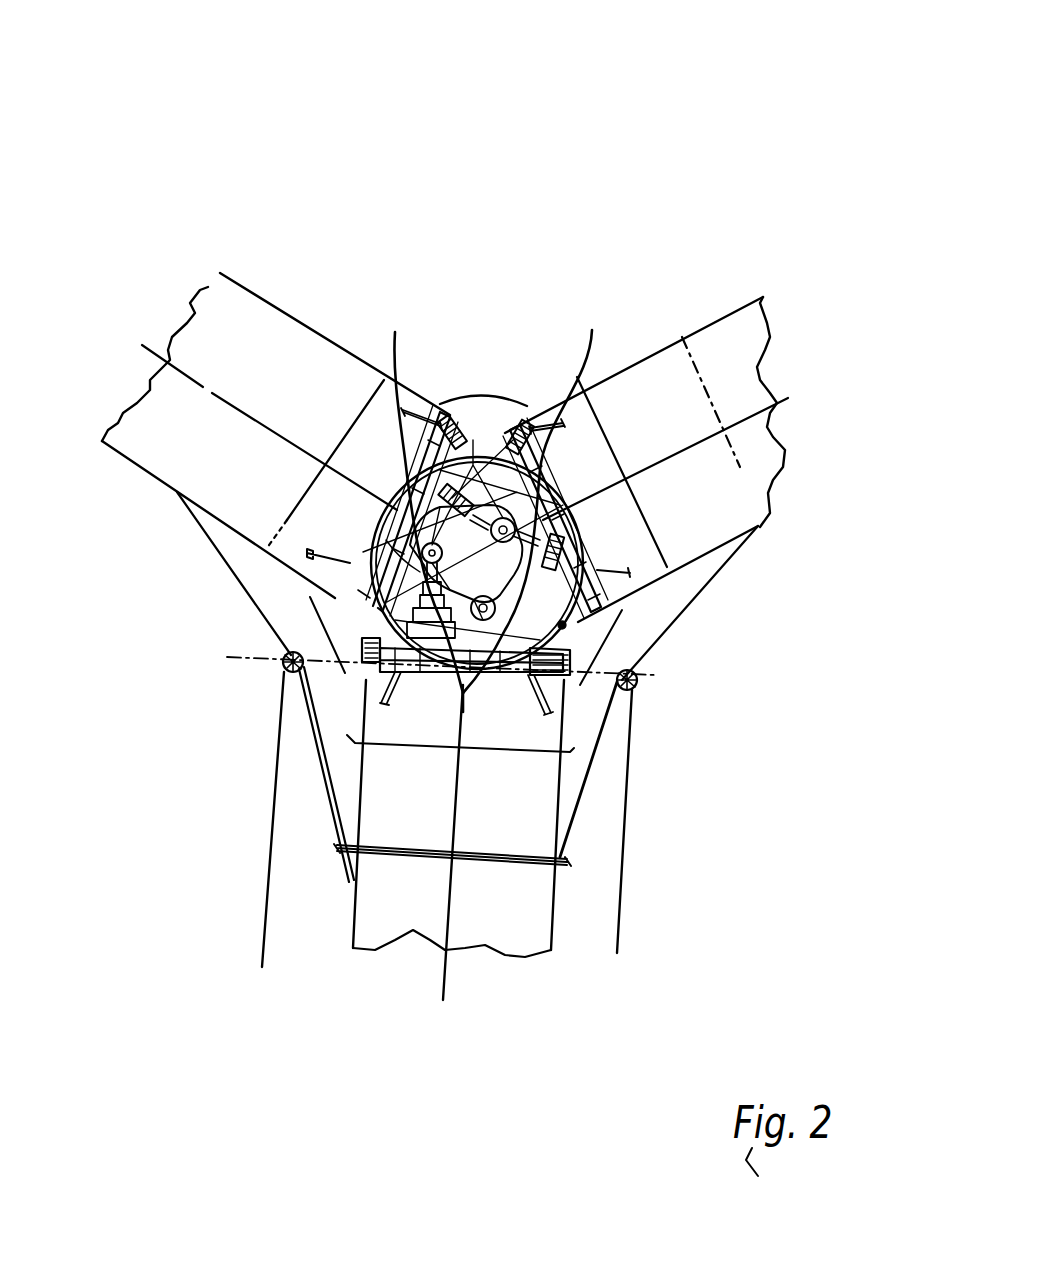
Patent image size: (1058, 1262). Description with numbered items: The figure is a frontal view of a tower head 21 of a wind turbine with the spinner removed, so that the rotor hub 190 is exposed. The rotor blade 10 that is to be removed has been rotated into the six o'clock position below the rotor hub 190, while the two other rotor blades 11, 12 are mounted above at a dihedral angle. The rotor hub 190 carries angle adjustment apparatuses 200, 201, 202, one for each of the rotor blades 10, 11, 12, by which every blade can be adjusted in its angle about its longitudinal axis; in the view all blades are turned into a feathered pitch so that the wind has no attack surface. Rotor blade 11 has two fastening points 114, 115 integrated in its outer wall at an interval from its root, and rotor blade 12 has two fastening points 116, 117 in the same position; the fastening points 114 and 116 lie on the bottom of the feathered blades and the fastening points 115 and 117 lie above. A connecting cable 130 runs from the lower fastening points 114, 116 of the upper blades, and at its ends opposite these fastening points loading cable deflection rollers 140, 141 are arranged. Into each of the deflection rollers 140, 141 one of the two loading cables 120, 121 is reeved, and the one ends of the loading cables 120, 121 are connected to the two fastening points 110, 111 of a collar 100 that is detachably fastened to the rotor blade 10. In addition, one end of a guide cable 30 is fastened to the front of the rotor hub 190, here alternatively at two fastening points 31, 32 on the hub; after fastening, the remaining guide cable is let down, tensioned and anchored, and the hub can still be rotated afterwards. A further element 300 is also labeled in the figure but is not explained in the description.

The tower head 21 is at (662, 92).
The rotor hub 190 is at (498, 331).
The rotor blade 11 is at (243, 417).
The rotor blade 12 is at (681, 432).
The fastening point 115 is at (282, 313).
The fastening point 117 is at (672, 340).
The fastening point 114 is at (177, 492).
The fastening point 116 is at (758, 526).
The angle adjustment apparatus 201 is at (397, 511).
The angle adjustment apparatus 202 is at (540, 527).
The guide cable 30 is at (462, 675).
The fastening point 31 is at (417, 494).
The fastening point 32 is at (540, 494).
The connecting cable 130 is at (237, 583).
The loading cable deflection roller 140 is at (284, 665).
The loading cable deflection roller 141 is at (637, 684).
The angle adjustment apparatus 200 is at (432, 648).
The attachment point 300 is at (562, 625).
The rotor blade 10 is at (460, 818).
The loading cable 120 is at (262, 959).
The loading cable 121 is at (625, 845).
The fastening point 110 is at (347, 850).
The fastening point 111 is at (557, 872).
The collar 100 is at (480, 858).